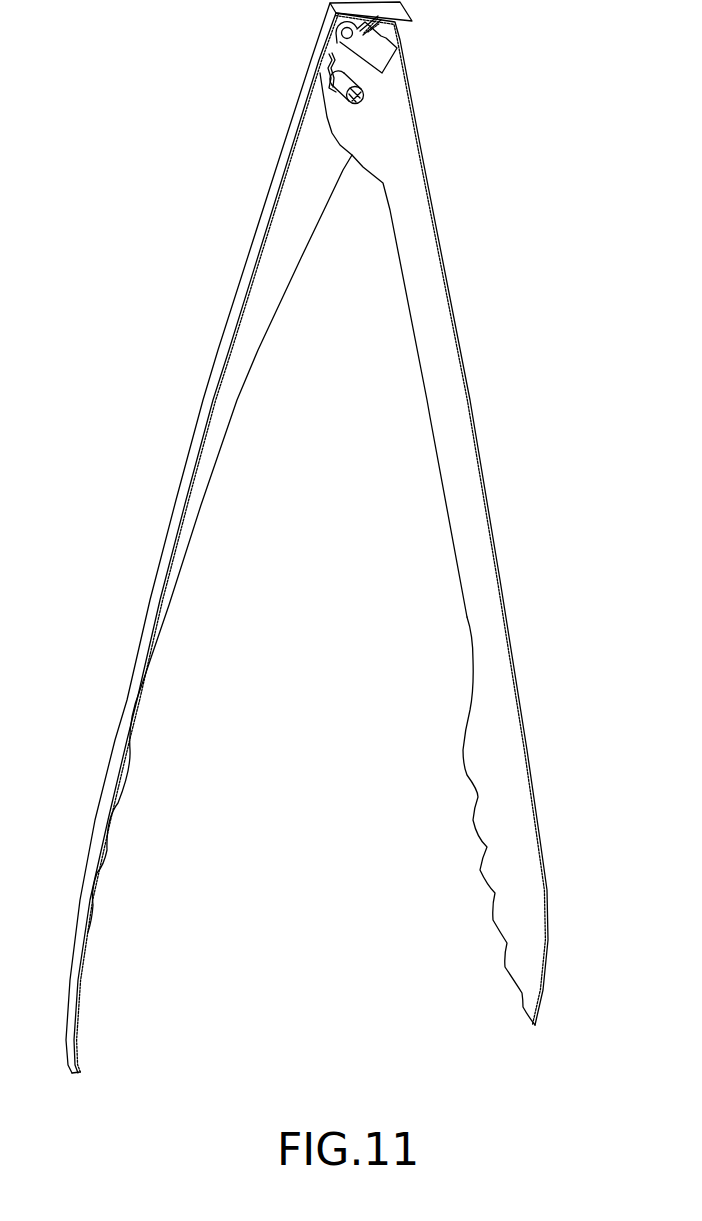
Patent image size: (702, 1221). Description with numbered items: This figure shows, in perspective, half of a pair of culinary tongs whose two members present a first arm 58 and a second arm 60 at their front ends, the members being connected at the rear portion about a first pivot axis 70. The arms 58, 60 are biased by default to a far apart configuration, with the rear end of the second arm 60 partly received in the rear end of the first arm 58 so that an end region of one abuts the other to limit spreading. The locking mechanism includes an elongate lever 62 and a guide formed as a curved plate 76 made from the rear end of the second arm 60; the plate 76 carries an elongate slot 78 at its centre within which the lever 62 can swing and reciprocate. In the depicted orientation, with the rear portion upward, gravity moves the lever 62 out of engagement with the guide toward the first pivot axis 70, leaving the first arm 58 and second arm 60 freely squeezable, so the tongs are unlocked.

The first arm 58 is at (85, 877).
The second arm 60 is at (503, 808).
The lever 62 is at (380, 61).
The first pivot axis 70 is at (345, 102).
The curved plate 76 is at (325, 75).
The elongate slot 78 is at (345, 62).